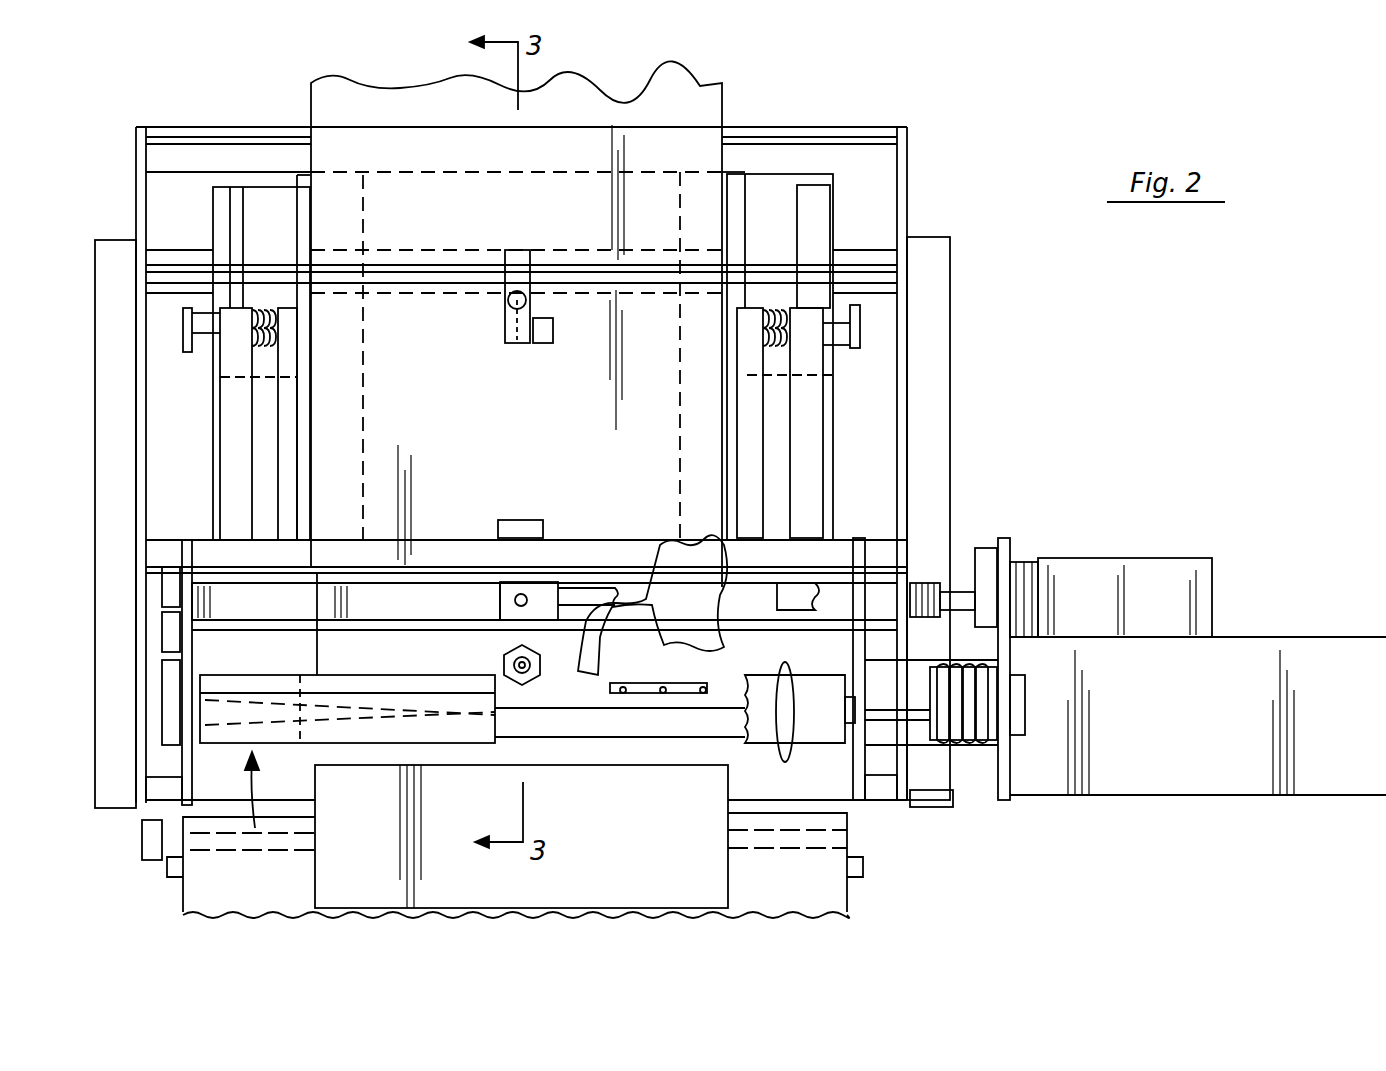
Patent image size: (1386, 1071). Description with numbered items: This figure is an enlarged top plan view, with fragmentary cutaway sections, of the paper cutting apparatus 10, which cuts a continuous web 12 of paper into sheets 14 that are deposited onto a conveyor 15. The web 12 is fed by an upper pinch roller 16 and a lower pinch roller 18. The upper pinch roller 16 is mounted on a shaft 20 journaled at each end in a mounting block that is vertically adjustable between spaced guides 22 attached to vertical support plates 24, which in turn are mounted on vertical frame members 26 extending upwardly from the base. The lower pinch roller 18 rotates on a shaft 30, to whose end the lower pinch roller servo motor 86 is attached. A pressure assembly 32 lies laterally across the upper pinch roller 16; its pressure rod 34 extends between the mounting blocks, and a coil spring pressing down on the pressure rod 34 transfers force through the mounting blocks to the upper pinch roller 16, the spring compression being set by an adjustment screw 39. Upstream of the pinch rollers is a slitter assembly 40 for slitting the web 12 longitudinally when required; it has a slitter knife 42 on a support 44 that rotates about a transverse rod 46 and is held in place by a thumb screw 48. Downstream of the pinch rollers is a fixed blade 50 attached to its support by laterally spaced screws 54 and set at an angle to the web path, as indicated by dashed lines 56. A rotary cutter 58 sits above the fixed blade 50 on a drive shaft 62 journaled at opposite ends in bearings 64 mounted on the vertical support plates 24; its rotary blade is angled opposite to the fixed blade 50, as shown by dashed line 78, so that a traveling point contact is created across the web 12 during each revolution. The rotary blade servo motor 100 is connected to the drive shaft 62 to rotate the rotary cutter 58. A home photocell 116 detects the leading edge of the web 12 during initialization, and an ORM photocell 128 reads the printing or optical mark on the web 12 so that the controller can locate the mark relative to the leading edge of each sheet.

The paper cutting apparatus 10 is at (1033, 357).
The continuous web 12 is at (705, 100).
The sheets 14 is at (620, 883).
The conveyor 15 is at (840, 893).
The upper pinch roller 16 is at (440, 575).
The lower pinch roller 18 is at (710, 525).
The shaft 20 is at (893, 593).
The guides 22 is at (172, 540).
The vertical support plates 24 is at (180, 790).
The vertical frame members 26 is at (140, 163).
The shaft 30 is at (960, 598).
The pressure assembly 32 is at (572, 576).
The pressure rod 34 is at (383, 600).
The adjustment screw 39 is at (520, 596).
The slitter assembly 40 is at (496, 291).
The slitter knife 42 is at (517, 350).
The support 44 is at (512, 330).
The transverse rod 46 is at (568, 275).
The thumb screw 48 is at (500, 303).
The fixed blade 50 is at (658, 757).
The screws 54 is at (700, 698).
The dashed lines 56 is at (527, 718).
The rotary cutter 58 is at (254, 805).
The drive shaft 62 is at (917, 717).
The bearings 64 is at (175, 745).
The dashed line 78 is at (293, 745).
The lower pinch roller servo motor 86 is at (1175, 596).
The rotary blade servo motor 100 is at (1212, 732).
The home photocell 116 is at (503, 665).
The ORM photocell 128 is at (521, 530).